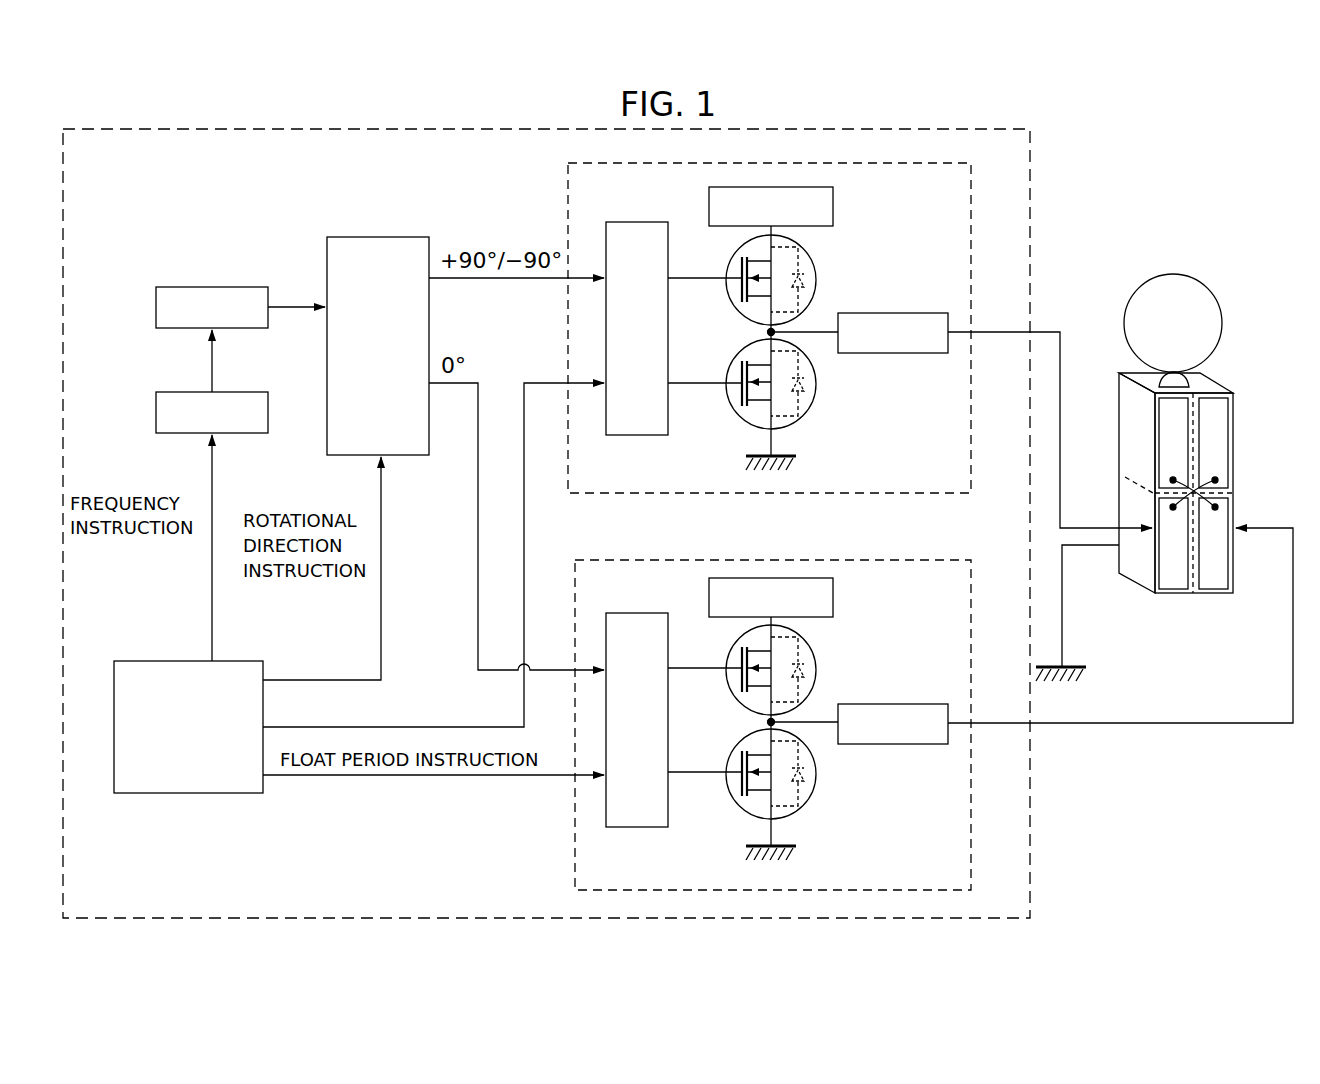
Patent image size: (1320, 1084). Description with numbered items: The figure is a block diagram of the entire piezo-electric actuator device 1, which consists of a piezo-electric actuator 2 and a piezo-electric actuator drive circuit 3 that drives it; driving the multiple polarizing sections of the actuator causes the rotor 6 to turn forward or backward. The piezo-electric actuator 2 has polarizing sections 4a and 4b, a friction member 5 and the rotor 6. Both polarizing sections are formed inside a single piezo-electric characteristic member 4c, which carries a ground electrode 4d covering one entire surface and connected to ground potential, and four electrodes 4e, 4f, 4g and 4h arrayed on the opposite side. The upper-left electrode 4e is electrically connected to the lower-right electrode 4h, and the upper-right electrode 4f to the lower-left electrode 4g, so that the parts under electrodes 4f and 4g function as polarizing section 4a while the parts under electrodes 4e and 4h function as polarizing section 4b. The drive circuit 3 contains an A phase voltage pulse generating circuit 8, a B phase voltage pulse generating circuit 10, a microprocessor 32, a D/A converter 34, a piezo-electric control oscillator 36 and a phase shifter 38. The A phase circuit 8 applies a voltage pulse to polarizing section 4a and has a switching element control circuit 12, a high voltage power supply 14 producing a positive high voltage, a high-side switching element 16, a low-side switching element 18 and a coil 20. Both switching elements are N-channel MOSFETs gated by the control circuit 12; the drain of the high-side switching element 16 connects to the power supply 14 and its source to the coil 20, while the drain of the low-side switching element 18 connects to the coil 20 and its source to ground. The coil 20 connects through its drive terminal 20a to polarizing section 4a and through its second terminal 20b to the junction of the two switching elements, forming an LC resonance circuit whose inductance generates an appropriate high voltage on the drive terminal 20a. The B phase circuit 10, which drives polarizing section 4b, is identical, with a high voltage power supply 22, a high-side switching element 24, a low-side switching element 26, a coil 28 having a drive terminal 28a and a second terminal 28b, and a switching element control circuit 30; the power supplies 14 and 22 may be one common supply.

The piezo-electric actuator device 1 is at (1180, 236).
The piezo-electric actuator 2 is at (1255, 348).
The piezo-electric actuator drive circuit 3 is at (1033, 204).
The polarizing section 4a is at (1240, 437).
The polarizing section 4b is at (1150, 424).
The piezo-electric characteristic member 4c is at (1138, 439).
The ground electrode 4d is at (1124, 485).
The electrode 4e is at (1172, 410).
The electrode 4f is at (1218, 410).
The electrode 4g is at (1172, 518).
The electrode 4h is at (1212, 518).
The friction member 5 is at (1190, 383).
The rotor 6 is at (1201, 284).
The A phase voltage pulse generating circuit 8 is at (566, 195).
The B phase voltage pulse generating circuit 10 is at (574, 835).
The switching element control circuit 12 is at (637, 435).
The high voltage power supply 14 is at (833, 204).
The high-side switching element 16 is at (740, 318).
The low-side switching element 18 is at (739, 418).
The coil 20 is at (887, 312).
The drive terminal 20a is at (996, 330).
The second terminal 20b is at (815, 330).
The high voltage power supply 22 is at (833, 595).
The high-side switching element 24 is at (740, 708).
The low-side switching element 26 is at (739, 809).
The coil 28 is at (887, 702).
The drive terminal 28a is at (996, 720).
The second terminal 28b is at (815, 720).
The switching element control circuit 30 is at (637, 827).
The microprocessor 32 is at (241, 660).
The D/A converter 34 is at (249, 435).
The piezo-electric control oscillator 36 is at (248, 286).
The phase shifter 38 is at (410, 456).